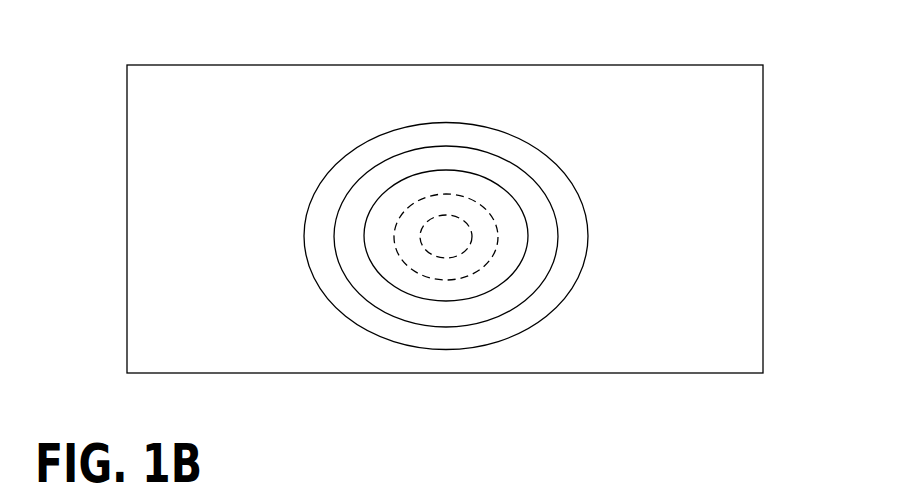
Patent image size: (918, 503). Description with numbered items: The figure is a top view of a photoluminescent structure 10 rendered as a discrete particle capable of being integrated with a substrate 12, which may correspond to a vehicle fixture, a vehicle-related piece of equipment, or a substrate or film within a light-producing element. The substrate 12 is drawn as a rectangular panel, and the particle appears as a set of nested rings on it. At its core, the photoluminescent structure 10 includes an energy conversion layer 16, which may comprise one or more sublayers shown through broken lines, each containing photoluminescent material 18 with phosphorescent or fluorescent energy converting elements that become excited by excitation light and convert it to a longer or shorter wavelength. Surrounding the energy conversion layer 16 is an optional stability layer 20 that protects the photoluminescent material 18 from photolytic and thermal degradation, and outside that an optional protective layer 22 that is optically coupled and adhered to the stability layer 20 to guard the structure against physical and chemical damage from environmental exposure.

The photoluminescent structure 10 is at (349, 132).
The substrate 12 is at (763, 172).
The energy conversion layer 16 is at (502, 285).
The photoluminescent material 18 is at (430, 252).
The stability layer 20 is at (514, 165).
The protective layer 22 is at (485, 127).